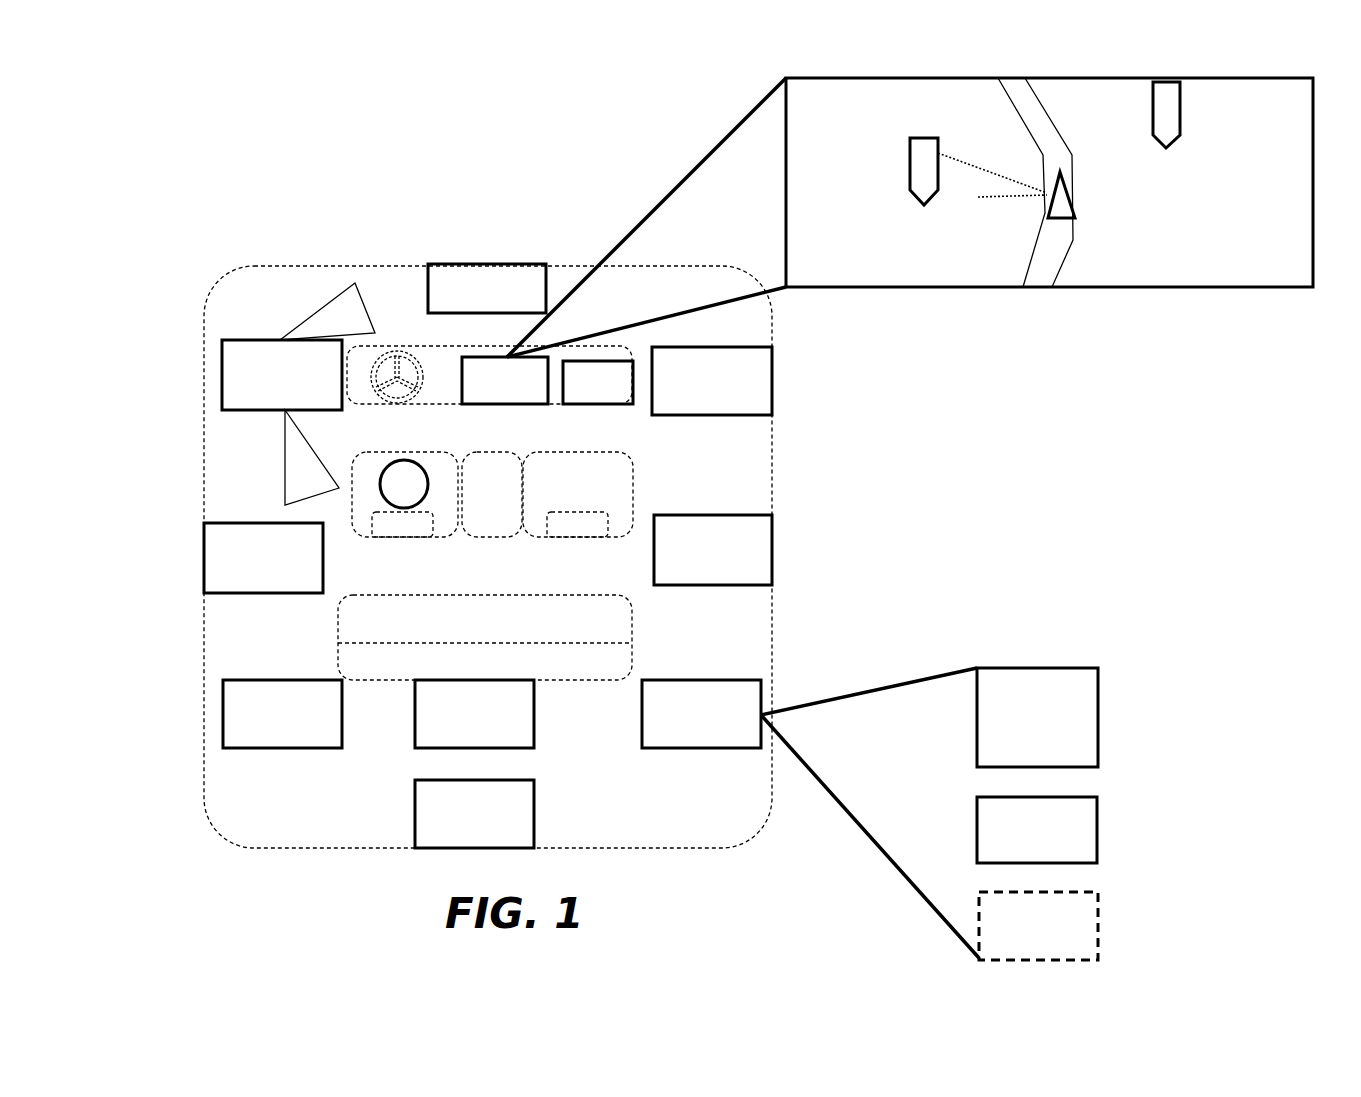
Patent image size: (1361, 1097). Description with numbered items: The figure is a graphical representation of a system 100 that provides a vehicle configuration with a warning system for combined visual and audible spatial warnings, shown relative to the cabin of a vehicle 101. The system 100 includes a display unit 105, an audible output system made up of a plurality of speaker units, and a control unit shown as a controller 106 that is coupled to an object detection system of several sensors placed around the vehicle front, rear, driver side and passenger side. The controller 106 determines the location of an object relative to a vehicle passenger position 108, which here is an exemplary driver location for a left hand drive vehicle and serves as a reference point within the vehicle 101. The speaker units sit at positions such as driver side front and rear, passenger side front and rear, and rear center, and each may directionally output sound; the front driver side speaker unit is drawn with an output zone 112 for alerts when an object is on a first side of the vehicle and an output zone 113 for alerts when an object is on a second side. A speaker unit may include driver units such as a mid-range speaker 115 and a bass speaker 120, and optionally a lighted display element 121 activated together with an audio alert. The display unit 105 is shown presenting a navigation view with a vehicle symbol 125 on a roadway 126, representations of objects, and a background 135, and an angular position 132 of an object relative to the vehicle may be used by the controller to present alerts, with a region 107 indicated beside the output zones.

The system 100 is at (306, 216).
The vehicle 101 is at (232, 321).
The display unit 105 is at (1300, 78).
The controller 106 is at (598, 382).
The sound field region 107 is at (268, 459).
The vehicle passenger position 108 is at (410, 474).
The output zone 112 is at (318, 450).
The output zone 113 is at (372, 310).
The mid-range speaker 115 is at (1098, 692).
The bass speaker 120 is at (1097, 818).
The display element 121 is at (1098, 914).
The vehicle symbol 125 is at (1076, 195).
The roadway 126 is at (1040, 120).
The angular position 132 is at (1022, 194).
The background 135 is at (872, 160).